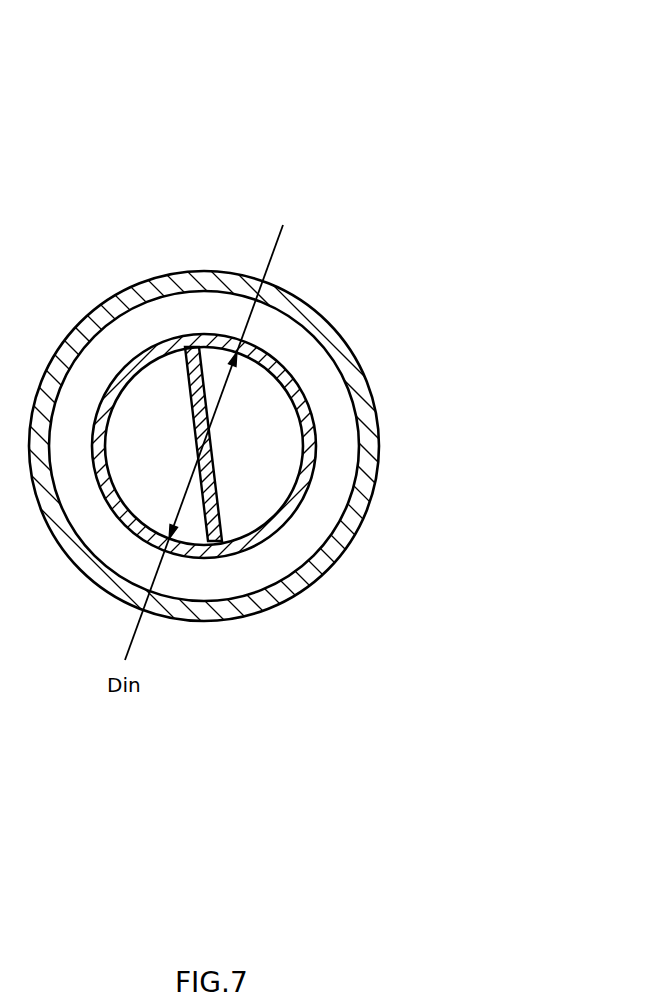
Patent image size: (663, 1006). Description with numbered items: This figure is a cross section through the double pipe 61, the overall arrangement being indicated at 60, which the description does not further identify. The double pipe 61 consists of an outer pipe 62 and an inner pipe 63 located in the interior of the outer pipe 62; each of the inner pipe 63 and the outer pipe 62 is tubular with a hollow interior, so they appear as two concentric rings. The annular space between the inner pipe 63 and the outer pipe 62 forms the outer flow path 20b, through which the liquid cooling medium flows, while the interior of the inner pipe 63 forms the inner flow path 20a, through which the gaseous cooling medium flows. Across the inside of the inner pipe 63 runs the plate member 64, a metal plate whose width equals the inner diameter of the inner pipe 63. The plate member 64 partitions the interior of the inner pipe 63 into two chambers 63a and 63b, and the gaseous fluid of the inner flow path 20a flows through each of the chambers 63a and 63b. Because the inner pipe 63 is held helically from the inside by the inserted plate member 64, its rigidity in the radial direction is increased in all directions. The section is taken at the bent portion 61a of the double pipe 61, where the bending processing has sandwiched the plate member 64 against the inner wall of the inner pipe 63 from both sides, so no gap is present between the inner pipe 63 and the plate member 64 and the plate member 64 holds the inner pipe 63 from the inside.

The hose 60 is at (407, 142).
The double pipe 61 is at (386, 227).
The bent portion 61a is at (362, 304).
The outer pipe 62 is at (345, 347).
The inner pipe 63 is at (308, 425).
The chamber 63a is at (220, 373).
The chamber 63b is at (148, 398).
The plate member 64 is at (213, 492).
The inner flow path 20a is at (160, 460).
The outer flow path 20b is at (84, 498).